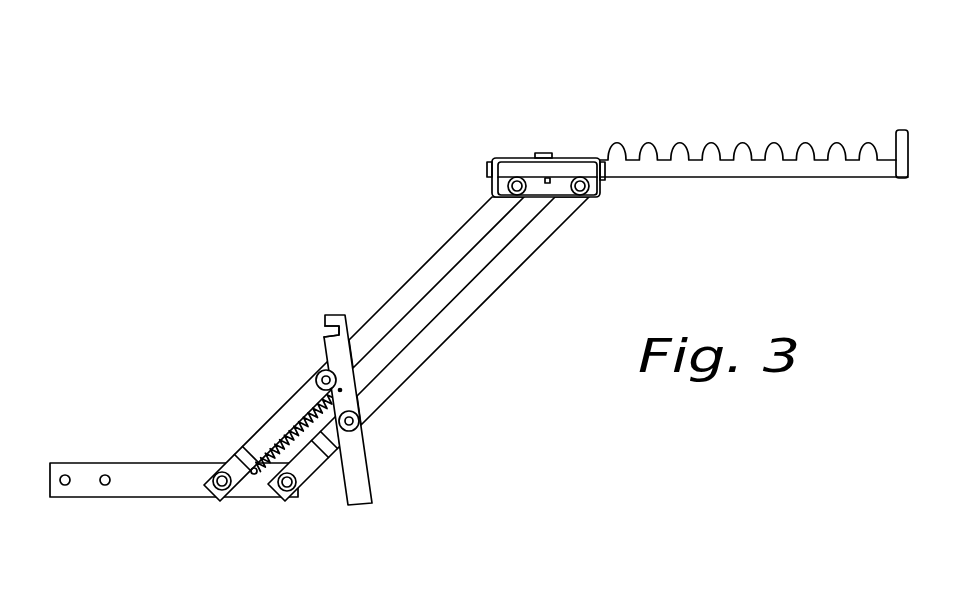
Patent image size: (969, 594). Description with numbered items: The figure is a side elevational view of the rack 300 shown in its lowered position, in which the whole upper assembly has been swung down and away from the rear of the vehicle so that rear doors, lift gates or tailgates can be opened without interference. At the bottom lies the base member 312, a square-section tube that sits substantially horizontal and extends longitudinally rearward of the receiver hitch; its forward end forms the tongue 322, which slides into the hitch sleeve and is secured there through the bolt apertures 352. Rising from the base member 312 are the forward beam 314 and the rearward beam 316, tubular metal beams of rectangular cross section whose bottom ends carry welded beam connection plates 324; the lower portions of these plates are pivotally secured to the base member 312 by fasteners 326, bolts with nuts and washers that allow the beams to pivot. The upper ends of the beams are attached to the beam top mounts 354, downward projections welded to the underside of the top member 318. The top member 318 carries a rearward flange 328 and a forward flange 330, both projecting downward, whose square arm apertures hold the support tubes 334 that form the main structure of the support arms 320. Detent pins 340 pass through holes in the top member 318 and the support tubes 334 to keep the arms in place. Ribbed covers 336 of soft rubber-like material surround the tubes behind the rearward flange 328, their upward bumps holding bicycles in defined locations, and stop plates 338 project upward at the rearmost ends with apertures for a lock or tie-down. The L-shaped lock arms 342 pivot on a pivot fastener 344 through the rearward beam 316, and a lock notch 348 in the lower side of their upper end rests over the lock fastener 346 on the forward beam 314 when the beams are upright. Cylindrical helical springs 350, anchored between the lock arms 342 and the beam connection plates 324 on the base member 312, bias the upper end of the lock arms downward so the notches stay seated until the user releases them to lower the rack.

The rack 300 is at (206, 150).
The base member 312 is at (136, 497).
The forward beam 314 is at (408, 281).
The rearward beam 316 is at (463, 313).
The top member 318 is at (508, 157).
The support arms 320 is at (790, 154).
The tongue 322 is at (87, 484).
The beam connection plates 324 is at (230, 452).
The fasteners 326 is at (285, 494).
The rearward flange 328 is at (603, 190).
The forward flange 330 is at (497, 187).
The support tubes 334 is at (570, 170).
The ribbed covers 336 is at (808, 180).
The stop plates 338 is at (900, 128).
The detent pins 340 is at (546, 153).
The lock arms 342 is at (355, 482).
The pivot fastener 344 is at (360, 420).
The lock fastener 346 is at (318, 372).
The lock notch 348 is at (323, 330).
The cylindrical helical springs 350 is at (293, 404).
The bolt apertures 352 is at (104, 474).
The beam top mounts 354 is at (543, 190).